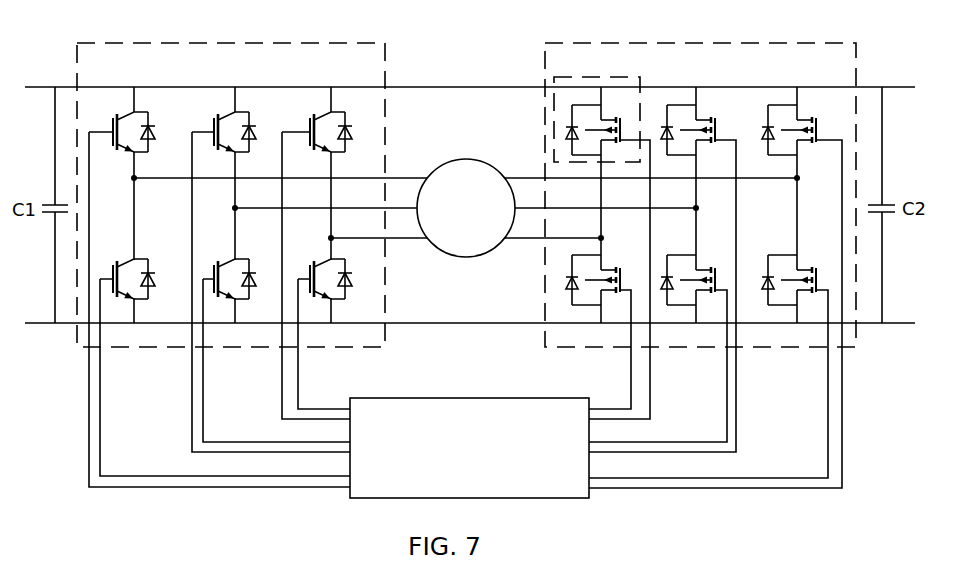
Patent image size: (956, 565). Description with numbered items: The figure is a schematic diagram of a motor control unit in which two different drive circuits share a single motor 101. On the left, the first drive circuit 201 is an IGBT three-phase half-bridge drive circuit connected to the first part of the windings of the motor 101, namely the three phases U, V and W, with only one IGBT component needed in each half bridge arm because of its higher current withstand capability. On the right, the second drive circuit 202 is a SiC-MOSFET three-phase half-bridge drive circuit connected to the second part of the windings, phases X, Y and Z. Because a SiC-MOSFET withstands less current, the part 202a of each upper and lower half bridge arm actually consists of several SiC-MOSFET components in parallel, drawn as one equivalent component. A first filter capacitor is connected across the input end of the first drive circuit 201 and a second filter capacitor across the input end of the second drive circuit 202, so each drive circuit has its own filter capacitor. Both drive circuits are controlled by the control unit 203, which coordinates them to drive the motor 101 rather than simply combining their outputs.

The first drive circuit 201 is at (230, 43).
The second drive circuit 202 is at (680, 251).
The part of the upper half bridge arm and the lower half bridge arm 202a is at (597, 77).
The motor 101 is at (462, 159).
The control unit 203 is at (470, 398).